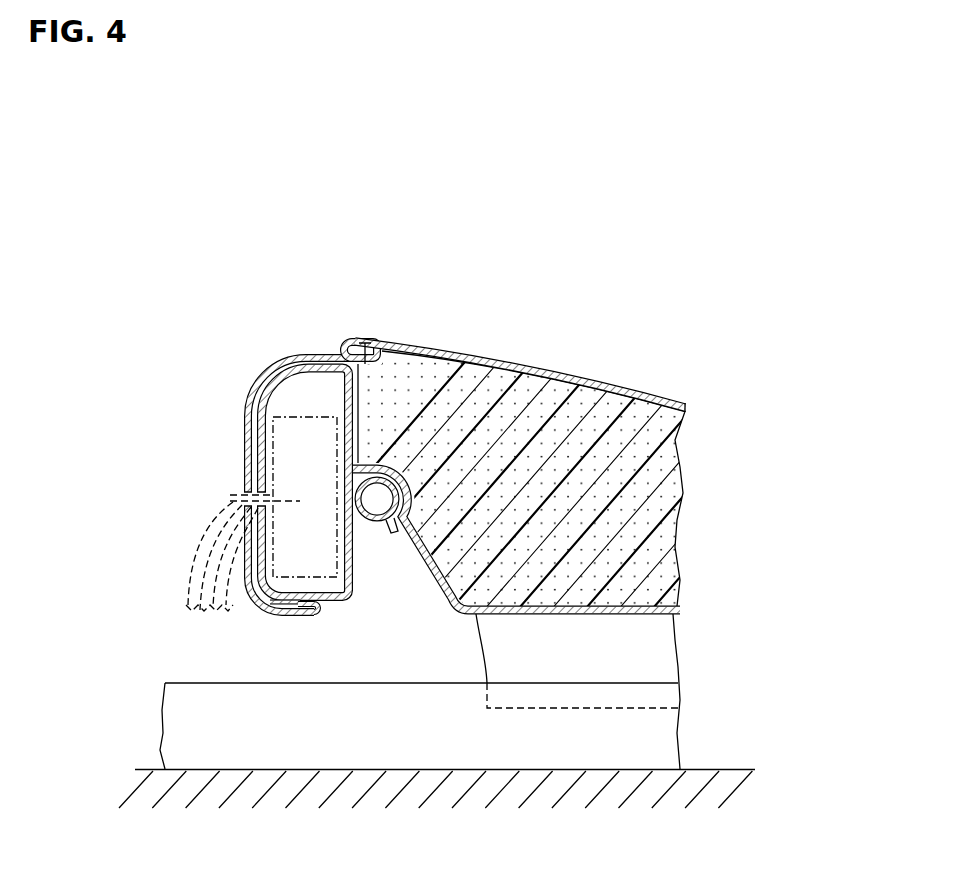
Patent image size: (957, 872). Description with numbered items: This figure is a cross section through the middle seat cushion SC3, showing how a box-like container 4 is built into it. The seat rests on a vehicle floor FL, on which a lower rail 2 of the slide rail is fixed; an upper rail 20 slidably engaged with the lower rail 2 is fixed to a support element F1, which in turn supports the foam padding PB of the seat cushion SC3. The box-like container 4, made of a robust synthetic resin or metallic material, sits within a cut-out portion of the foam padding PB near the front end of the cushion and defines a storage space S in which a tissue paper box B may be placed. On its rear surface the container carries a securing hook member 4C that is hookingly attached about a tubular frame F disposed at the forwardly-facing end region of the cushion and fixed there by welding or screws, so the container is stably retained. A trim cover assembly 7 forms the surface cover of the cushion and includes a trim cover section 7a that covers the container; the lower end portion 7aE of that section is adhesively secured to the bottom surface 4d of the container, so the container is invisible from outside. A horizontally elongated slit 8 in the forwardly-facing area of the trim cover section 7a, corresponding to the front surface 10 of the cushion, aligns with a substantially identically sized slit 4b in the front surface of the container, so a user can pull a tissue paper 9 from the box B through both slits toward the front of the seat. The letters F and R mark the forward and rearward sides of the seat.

The lower rail 2 is at (387, 683).
The box-like container 4 is at (285, 372).
The slit 4b is at (273, 500).
The securing hook member 4C is at (415, 527).
The bottom surface 4d is at (300, 623).
The trim cover assembly 7 is at (262, 385).
The trim cover section 7a is at (272, 378).
The lower end portion 7aE is at (322, 614).
The slit 8 is at (232, 496).
The tissue paper 9 is at (196, 550).
The front surface 10 is at (238, 427).
The tissue paper box B is at (313, 425).
The storage space S is at (324, 398).
The tubular frame F is at (128, 470).
The rear direction R is at (790, 466).
The foam padding PB is at (650, 525).
The seat cushion SC3 is at (624, 384).
The support element F1 is at (610, 618).
The upper rail 20 is at (632, 658).
The vehicle floor FL is at (710, 768).